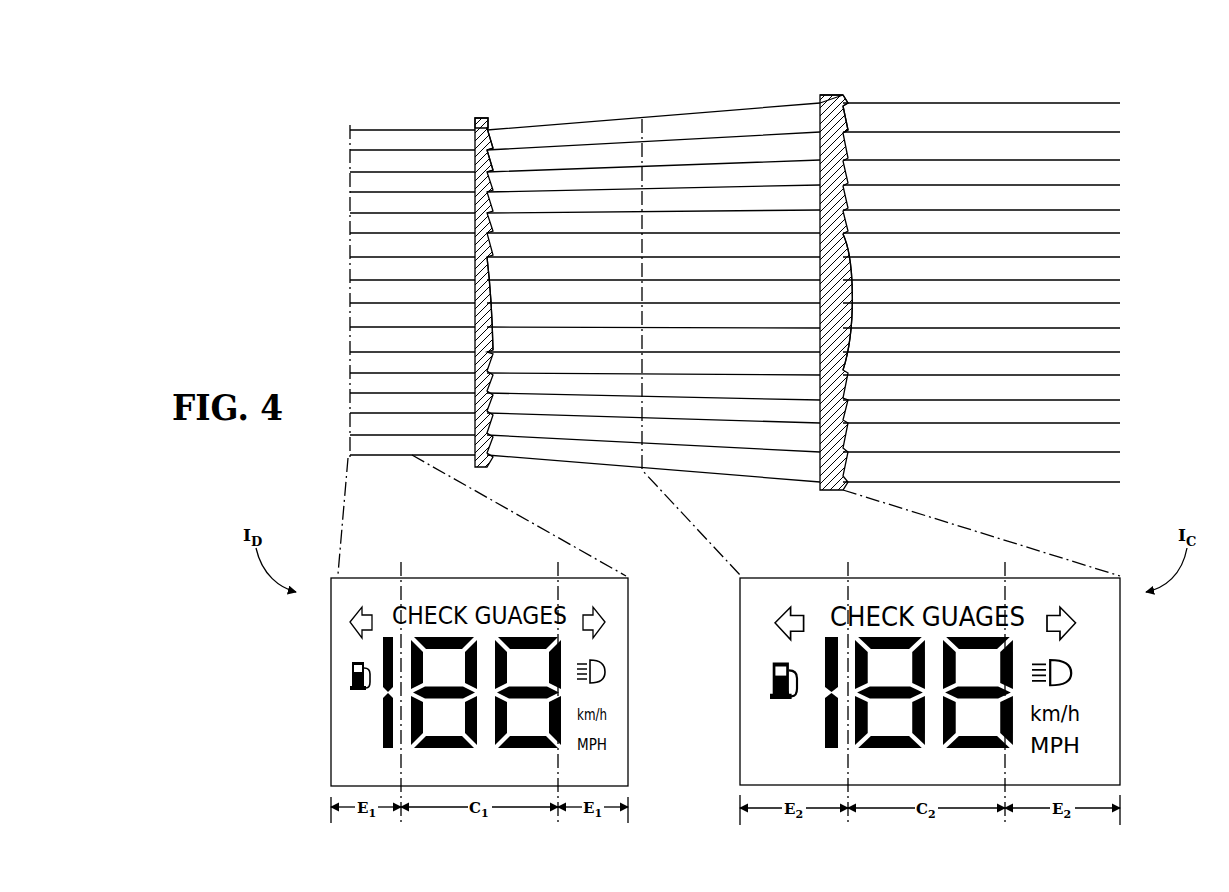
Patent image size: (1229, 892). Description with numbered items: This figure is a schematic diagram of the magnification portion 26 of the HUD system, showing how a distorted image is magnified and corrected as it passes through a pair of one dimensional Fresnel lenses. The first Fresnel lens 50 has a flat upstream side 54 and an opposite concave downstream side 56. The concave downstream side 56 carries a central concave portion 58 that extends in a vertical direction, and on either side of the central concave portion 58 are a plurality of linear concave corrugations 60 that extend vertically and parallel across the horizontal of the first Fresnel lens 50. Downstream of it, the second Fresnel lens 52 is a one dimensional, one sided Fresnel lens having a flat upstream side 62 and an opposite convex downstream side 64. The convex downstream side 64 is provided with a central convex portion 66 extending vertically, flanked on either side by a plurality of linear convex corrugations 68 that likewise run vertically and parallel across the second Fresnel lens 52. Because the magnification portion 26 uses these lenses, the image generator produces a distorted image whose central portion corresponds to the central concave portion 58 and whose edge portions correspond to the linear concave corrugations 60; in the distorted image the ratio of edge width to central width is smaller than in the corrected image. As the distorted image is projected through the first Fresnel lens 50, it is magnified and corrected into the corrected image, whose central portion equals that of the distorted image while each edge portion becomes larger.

The magnification portion 26 is at (247, 168).
The first Fresnel lens 50 is at (484, 110).
The second Fresnel lens 52 is at (828, 88).
The flat upstream side 54 is at (476, 122).
The concave downstream side 56 is at (490, 128).
The central concave portion 58 is at (489, 289).
The linear concave corrugations 60 is at (489, 140).
The flat upstream side 62 is at (820, 101).
The convex downstream side 64 is at (844, 105).
The central convex portion 66 is at (860, 287).
The linear convex corrugations 68 is at (845, 121).